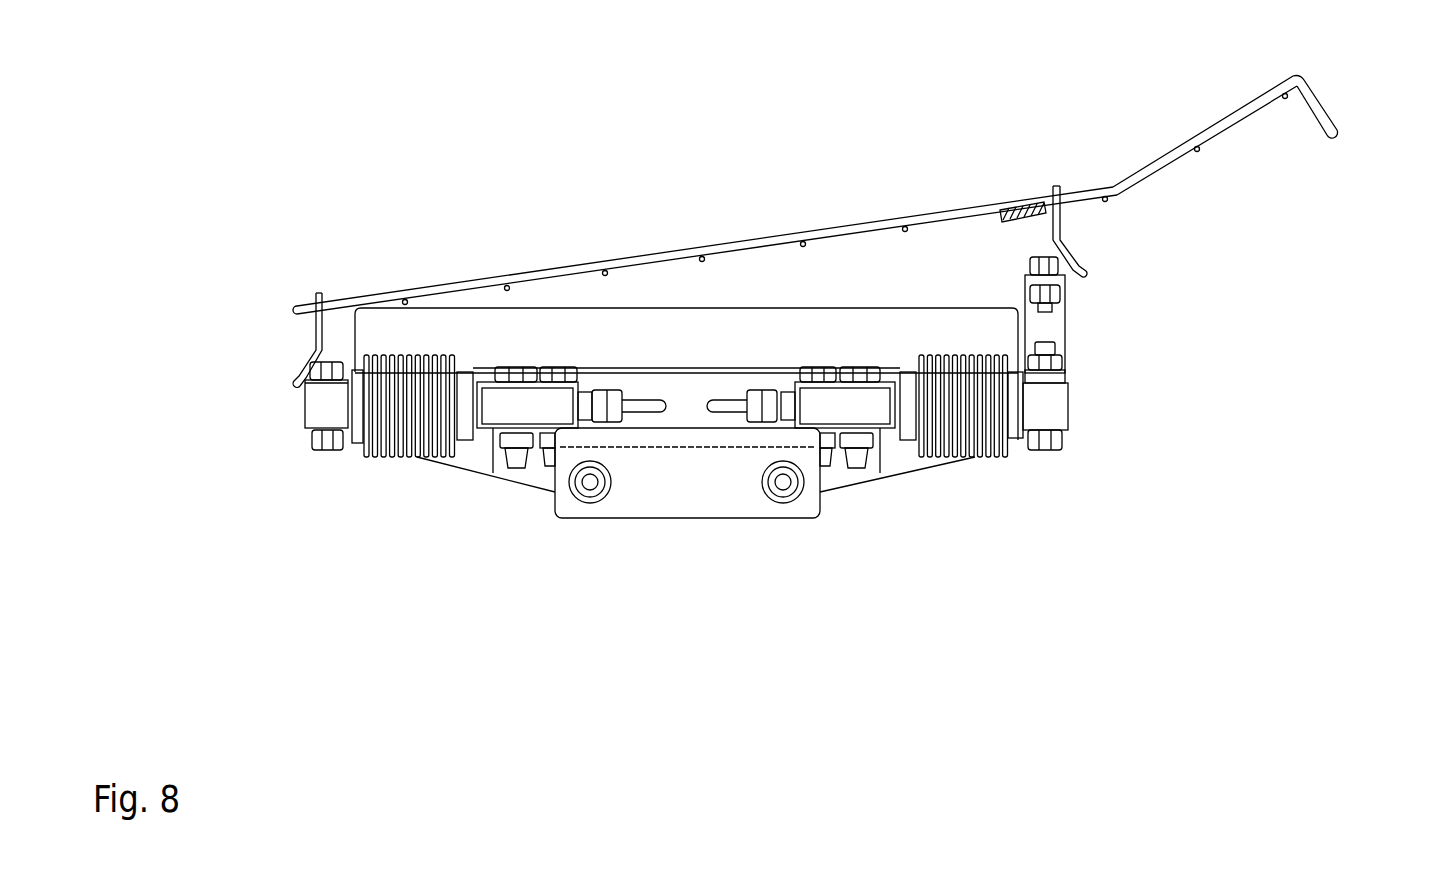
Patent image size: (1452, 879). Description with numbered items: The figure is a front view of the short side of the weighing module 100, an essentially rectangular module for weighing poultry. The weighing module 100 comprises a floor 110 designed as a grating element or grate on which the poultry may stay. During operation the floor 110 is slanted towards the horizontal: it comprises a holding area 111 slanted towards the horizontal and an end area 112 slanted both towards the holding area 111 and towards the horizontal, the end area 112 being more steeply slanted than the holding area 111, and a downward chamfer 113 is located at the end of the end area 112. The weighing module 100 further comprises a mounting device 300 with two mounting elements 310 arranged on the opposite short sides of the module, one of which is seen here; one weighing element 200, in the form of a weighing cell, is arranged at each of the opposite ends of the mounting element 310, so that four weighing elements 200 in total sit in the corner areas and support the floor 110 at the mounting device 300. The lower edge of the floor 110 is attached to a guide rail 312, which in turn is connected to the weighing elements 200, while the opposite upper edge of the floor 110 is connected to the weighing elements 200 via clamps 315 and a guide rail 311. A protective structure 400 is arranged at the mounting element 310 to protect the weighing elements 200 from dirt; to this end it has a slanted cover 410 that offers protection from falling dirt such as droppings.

The weighing module 100 is at (331, 192).
The floor 110 is at (566, 236).
The holding area 111 is at (778, 230).
The end area 112 is at (1167, 157).
The downward chamfer 113 is at (1318, 103).
The weighing element 200 is at (417, 455).
The mounting device 300 is at (572, 552).
The mounting element 310 is at (700, 480).
The guide rail 311 is at (1062, 230).
The guide rail 312 is at (317, 330).
The clamp 315 is at (1015, 213).
The protective structure 400 is at (688, 405).
The slanted cover 410 is at (620, 335).